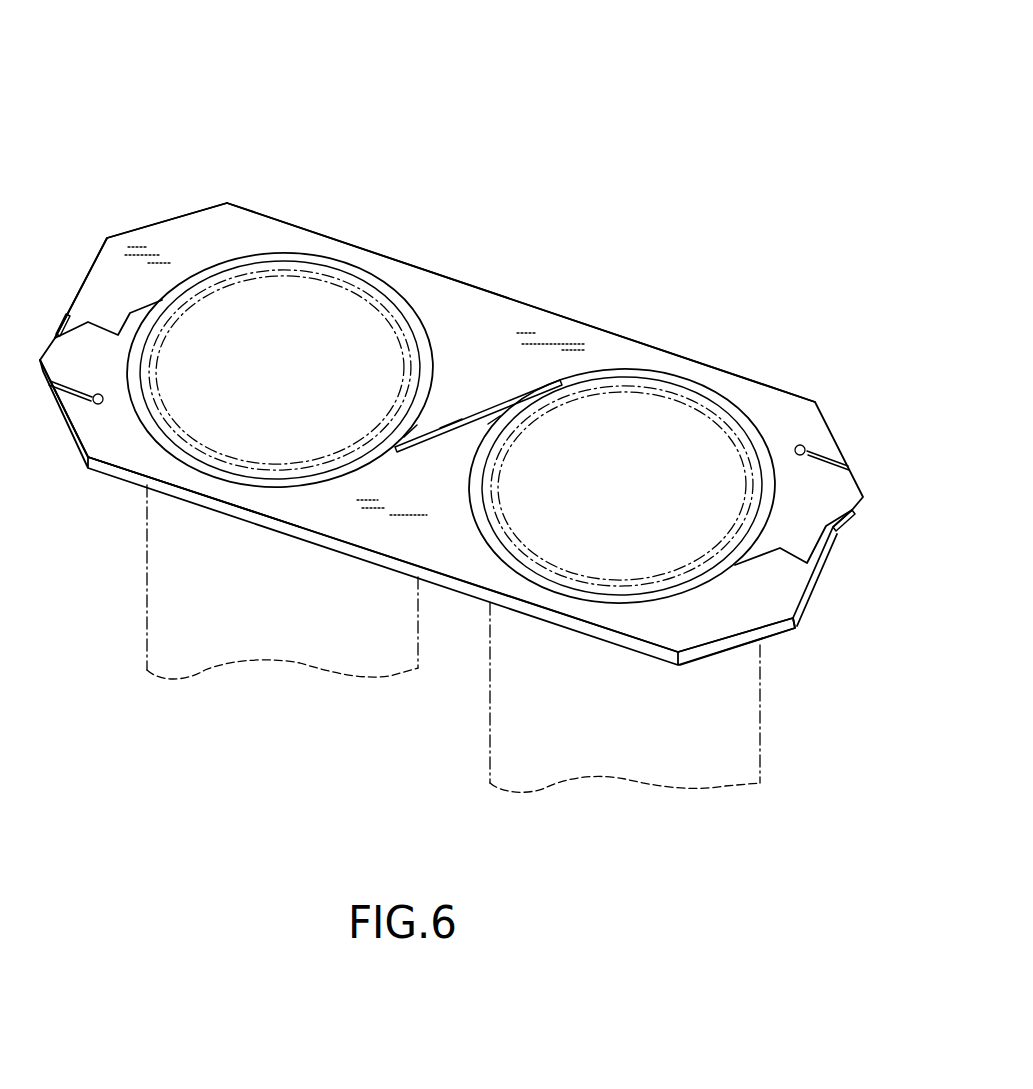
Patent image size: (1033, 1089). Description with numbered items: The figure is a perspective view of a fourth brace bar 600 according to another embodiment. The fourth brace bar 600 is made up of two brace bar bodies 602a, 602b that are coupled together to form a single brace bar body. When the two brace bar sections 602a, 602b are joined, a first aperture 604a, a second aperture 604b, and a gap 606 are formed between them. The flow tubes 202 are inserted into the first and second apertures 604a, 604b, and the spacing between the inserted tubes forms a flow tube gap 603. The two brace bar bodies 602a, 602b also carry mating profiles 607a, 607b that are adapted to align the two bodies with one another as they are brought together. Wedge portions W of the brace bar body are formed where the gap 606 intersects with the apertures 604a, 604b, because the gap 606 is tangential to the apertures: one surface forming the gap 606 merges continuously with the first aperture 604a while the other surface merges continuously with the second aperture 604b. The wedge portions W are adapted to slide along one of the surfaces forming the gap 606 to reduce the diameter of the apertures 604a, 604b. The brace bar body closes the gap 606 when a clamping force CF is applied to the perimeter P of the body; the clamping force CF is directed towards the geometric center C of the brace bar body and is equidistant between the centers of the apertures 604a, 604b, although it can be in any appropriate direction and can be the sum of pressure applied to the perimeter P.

The fourth brace bar 600 is at (665, 112).
The brace bar body 602a is at (178, 231).
The brace bar body 602b is at (150, 462).
The flow tube gap 603 is at (378, 295).
The first aperture 604a is at (135, 381).
The second aperture 604b is at (583, 592).
The flow tubes 202 is at (297, 278).
The gap 606 is at (497, 402).
The mating profile 607a is at (62, 332).
The mating profile 607b is at (835, 531).
The clamping force CF is at (528, 302).
The wedge portions W is at (416, 424).
The geometric center C is at (448, 427).
The perimeter P is at (778, 630).